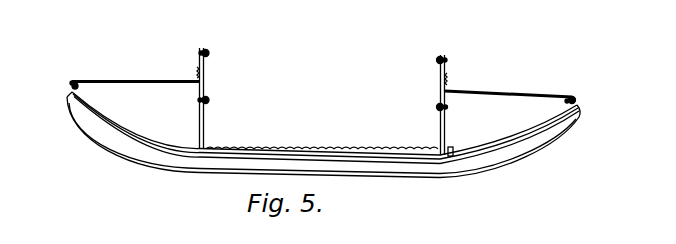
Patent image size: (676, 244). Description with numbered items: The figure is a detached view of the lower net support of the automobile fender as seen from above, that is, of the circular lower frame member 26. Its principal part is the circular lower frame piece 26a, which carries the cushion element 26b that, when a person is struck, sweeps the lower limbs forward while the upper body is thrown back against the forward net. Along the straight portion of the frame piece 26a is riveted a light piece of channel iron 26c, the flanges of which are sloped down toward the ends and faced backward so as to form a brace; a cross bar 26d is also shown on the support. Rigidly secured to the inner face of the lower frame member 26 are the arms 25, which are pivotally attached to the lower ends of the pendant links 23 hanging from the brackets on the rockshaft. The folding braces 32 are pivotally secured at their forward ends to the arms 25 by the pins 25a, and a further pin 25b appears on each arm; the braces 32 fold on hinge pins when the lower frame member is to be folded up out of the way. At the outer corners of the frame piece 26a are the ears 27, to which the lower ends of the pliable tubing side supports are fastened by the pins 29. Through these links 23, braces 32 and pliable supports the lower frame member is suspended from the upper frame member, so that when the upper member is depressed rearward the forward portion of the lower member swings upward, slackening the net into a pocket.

The pendant link 23 is at (208, 51).
The arm 25 is at (206, 83).
The pin 25a is at (199, 100).
The upper knob 25b is at (200, 55).
The circular lower frame member 26 is at (400, 179).
The circular lower frame piece 26a is at (463, 158).
The cushion element 26b is at (472, 178).
The channel iron 26c is at (322, 147).
The cross bar 26d is at (148, 78).
The ear 27 is at (78, 86).
The pin 29 is at (69, 84).
The folding brace 32 is at (208, 101).